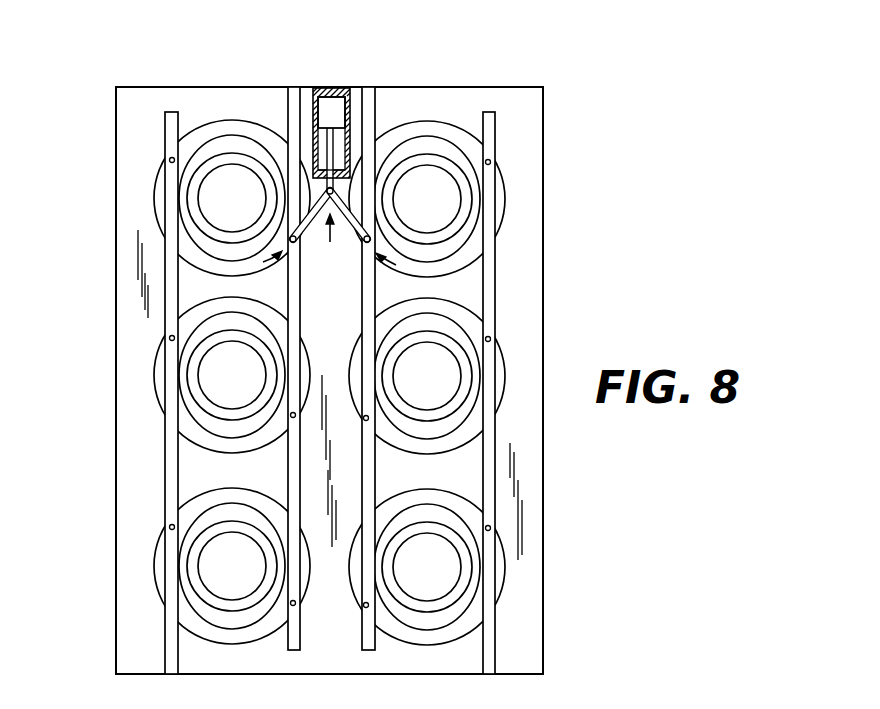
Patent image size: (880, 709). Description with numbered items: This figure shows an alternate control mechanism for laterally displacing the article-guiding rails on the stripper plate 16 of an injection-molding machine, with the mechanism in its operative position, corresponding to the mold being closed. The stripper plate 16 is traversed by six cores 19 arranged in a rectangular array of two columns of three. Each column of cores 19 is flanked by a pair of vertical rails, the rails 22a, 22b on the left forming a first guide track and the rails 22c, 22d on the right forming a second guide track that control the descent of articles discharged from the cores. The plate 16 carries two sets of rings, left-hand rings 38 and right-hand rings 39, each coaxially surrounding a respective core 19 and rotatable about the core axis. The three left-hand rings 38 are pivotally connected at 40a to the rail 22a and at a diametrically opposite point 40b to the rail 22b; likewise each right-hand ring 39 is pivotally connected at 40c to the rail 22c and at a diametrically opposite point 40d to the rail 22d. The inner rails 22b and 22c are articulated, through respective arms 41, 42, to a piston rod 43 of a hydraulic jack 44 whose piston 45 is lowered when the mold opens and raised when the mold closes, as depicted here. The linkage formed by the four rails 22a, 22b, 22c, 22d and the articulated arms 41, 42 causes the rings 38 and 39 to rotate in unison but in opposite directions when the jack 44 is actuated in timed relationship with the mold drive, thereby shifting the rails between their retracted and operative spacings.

The stripper plate 16 is at (525, 298).
The cores 19 is at (237, 178).
The rail 22a is at (170, 468).
The rail 22b is at (292, 462).
The rail 22c is at (367, 473).
The rail 22d is at (488, 450).
The rings 38 is at (162, 368).
The rings 39 is at (218, 123).
The pivotal connection 40a is at (171, 160).
The pivotal connection 40b is at (291, 240).
The pivotal connection 40c is at (369, 240).
The pivotal connection 40d is at (490, 160).
The arm 41 is at (316, 210).
The arm 42 is at (348, 208).
The piston rod 43 is at (333, 148).
The hydraulic jack 44 is at (314, 140).
The piston 45 is at (332, 122).